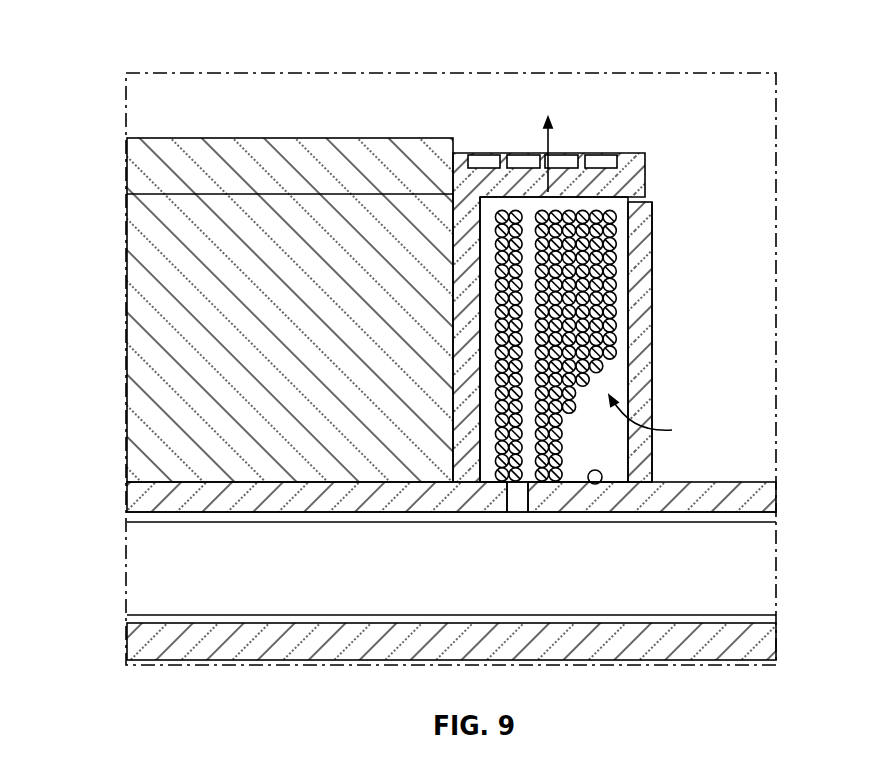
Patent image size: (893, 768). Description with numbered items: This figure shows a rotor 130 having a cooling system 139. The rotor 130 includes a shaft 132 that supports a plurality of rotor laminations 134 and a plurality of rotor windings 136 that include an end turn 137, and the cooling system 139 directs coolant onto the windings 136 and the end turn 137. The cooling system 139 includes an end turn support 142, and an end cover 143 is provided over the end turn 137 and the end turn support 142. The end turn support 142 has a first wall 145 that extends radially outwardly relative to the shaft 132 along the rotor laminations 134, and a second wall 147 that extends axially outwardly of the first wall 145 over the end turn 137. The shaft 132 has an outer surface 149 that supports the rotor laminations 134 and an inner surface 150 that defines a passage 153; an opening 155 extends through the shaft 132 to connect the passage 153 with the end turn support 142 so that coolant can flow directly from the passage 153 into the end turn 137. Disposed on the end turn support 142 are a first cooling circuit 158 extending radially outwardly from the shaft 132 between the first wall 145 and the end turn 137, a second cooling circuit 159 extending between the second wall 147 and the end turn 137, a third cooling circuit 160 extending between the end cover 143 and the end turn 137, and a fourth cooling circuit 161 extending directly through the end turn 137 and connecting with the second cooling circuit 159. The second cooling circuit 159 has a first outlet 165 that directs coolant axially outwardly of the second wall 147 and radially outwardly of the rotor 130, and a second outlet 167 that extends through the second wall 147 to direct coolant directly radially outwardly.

The rotor 130 is at (158, 106).
The shaft 132 is at (662, 468).
The rotor laminations 134 is at (142, 168).
The rotor windings 136 is at (664, 421).
The end turn 137 is at (577, 333).
The cooling system 139 is at (736, 504).
The end turn support 142 is at (465, 148).
The end cover 143 is at (652, 264).
The first wall 145 is at (463, 227).
The second wall 147 is at (485, 182).
The outer surface 149 is at (588, 513).
The inner surface 150 is at (457, 512).
The passage 153 is at (360, 573).
The opening 155 is at (528, 503).
The first cooling circuit 158 is at (488, 393).
The second cooling circuit 159 is at (554, 282).
The third cooling circuit 160 is at (615, 381).
The fourth cooling circuit 161 is at (527, 382).
The first outlet 165 is at (644, 204).
The second outlet 167 is at (545, 165).